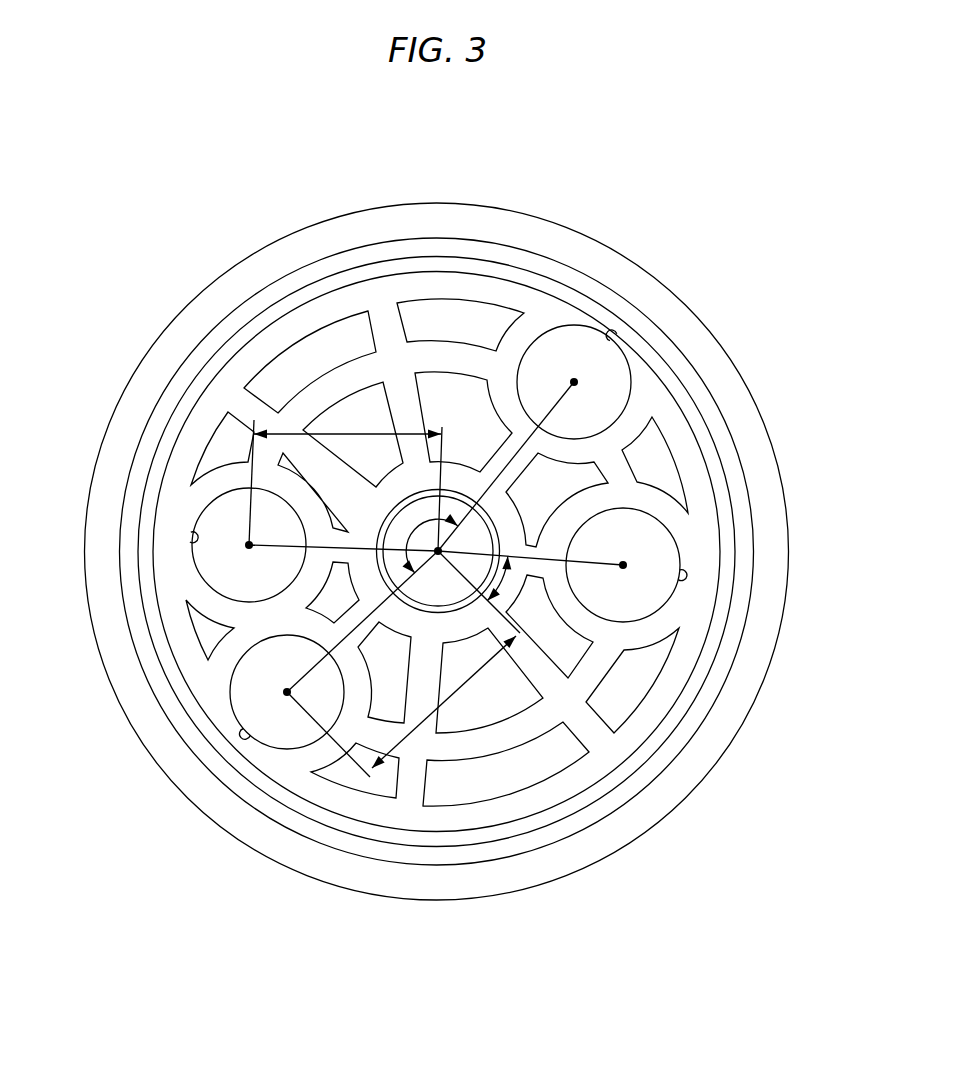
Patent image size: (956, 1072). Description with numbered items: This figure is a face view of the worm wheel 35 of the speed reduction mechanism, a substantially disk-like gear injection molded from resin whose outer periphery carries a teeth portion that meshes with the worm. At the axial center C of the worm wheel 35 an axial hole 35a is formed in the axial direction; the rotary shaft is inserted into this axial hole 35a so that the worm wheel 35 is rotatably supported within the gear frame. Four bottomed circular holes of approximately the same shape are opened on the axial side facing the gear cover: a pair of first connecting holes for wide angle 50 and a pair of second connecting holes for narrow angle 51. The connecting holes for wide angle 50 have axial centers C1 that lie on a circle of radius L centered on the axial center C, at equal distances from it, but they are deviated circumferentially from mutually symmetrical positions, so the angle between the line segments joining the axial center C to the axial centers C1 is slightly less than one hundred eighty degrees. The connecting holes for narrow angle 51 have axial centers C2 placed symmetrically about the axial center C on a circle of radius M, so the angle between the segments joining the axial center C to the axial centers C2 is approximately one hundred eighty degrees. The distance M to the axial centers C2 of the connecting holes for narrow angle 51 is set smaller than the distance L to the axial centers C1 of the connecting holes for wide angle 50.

The worm wheel 35 is at (182, 310).
The axial hole 35a is at (461, 508).
The first connecting hole (connecting hole for wide angle) 50 is at (536, 327).
The second connecting hole (connecting hole for narrow angle) 51 is at (247, 600).
The axial center of connecting hole for wide angle C1 is at (574, 382).
The axial center of connecting hole for narrow angle C2 is at (249, 545).
The axial center of the worm wheel C is at (438, 551).
The distance M is at (345, 480).
The distance L is at (401, 706).